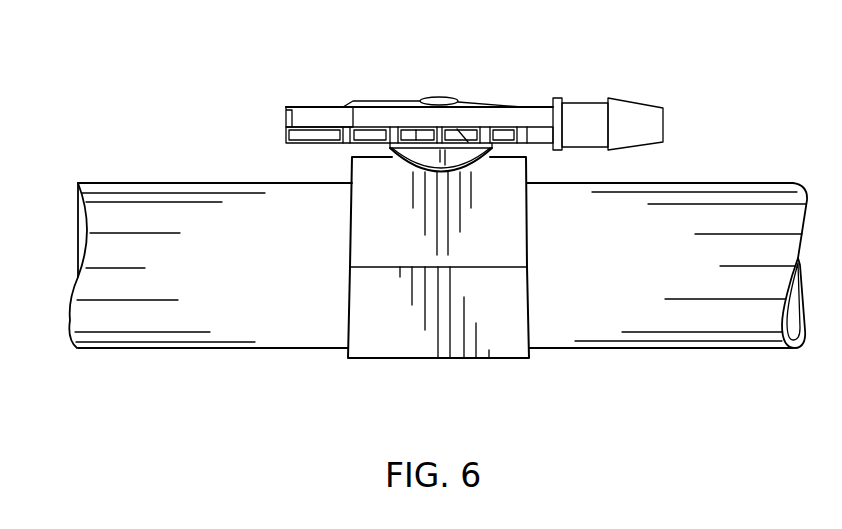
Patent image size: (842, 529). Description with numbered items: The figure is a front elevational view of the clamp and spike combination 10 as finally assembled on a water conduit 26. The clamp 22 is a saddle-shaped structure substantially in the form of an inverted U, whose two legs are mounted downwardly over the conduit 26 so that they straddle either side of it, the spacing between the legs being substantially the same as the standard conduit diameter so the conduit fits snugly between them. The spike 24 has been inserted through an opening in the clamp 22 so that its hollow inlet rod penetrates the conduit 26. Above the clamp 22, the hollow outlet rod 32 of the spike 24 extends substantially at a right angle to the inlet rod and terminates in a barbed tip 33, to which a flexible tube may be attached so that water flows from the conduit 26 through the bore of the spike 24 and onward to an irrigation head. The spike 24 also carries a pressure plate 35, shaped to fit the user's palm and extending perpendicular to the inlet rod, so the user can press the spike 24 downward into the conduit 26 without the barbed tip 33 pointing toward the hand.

The valve assembly 10 is at (443, 75).
The clamp 22 is at (508, 235).
The spike 24 is at (508, 105).
The water conduit 26 is at (735, 198).
The outlet rod 32 is at (583, 113).
The barbed tip 33 is at (633, 118).
The pressure plate 35 is at (316, 116).